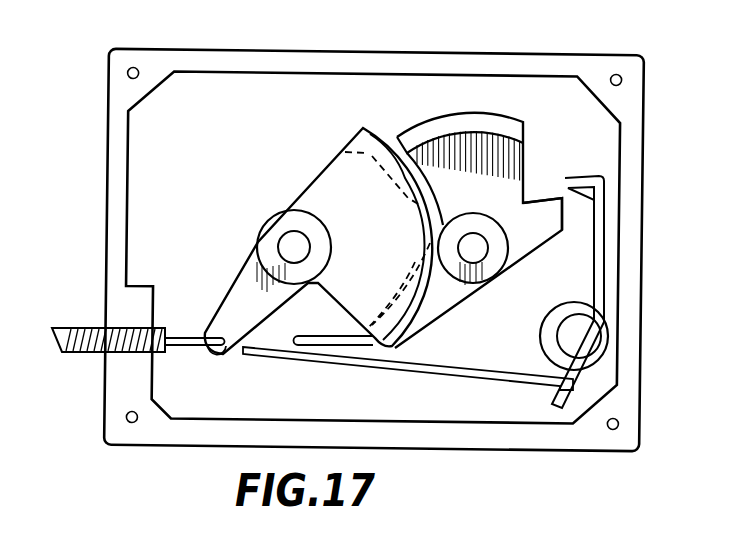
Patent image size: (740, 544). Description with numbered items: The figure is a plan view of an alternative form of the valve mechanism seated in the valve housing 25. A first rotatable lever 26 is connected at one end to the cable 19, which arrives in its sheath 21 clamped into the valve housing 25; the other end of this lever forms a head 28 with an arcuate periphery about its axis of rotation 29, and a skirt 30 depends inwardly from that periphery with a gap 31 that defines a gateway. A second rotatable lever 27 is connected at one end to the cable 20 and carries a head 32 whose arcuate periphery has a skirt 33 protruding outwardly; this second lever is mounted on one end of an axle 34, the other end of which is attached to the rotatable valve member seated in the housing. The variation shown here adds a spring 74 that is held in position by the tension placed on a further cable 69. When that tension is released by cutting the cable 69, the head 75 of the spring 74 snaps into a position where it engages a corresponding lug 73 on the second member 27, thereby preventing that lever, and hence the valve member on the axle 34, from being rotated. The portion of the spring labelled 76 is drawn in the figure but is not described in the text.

The cable 19 is at (182, 338).
The cable 20 is at (311, 342).
The sheath 21 is at (83, 327).
The valve housing 25 is at (134, 54).
The first rotatable lever 26 is at (220, 358).
The second rotatable lever 27 is at (440, 318).
The head 28 is at (322, 202).
The axis of rotation 29 is at (290, 244).
The skirt 30 is at (343, 151).
The gap 31 is at (413, 210).
The head 32 is at (487, 148).
The skirt 33 is at (447, 134).
The axle 34 is at (480, 248).
The cable 69 is at (488, 386).
The lug 73 is at (543, 199).
The spring 74 is at (604, 280).
The head 75 is at (577, 170).
The spring lower end 76 is at (597, 379).